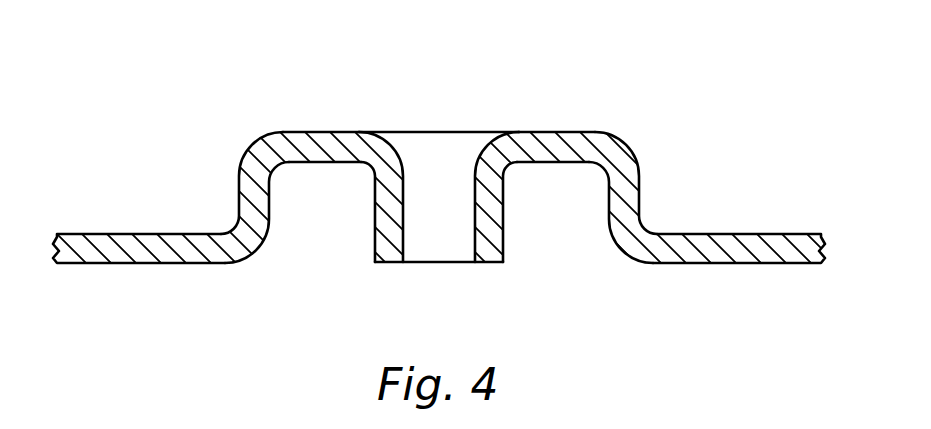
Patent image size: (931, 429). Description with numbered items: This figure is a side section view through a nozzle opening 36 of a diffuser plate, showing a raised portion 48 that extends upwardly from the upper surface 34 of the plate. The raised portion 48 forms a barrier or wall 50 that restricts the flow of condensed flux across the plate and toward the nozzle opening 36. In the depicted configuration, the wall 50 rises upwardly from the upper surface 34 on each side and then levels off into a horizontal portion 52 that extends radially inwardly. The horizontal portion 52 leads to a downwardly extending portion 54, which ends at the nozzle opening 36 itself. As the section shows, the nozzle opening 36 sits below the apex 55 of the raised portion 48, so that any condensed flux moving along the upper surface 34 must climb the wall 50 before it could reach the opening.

The upper surface 34 is at (758, 234).
The nozzle opening 36 is at (435, 262).
The raised portion 48 is at (637, 182).
The wall 50 is at (238, 197).
The horizontal portion 52 is at (305, 131).
The downwardly extending portion 54 is at (405, 200).
The apex 55 is at (557, 131).